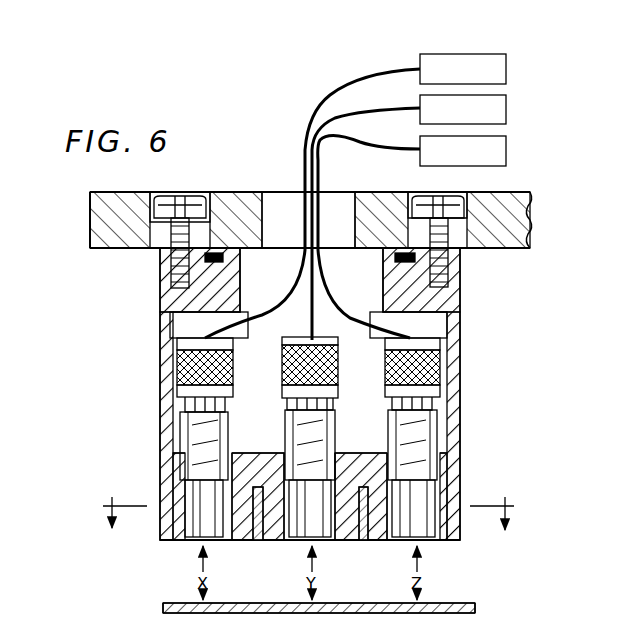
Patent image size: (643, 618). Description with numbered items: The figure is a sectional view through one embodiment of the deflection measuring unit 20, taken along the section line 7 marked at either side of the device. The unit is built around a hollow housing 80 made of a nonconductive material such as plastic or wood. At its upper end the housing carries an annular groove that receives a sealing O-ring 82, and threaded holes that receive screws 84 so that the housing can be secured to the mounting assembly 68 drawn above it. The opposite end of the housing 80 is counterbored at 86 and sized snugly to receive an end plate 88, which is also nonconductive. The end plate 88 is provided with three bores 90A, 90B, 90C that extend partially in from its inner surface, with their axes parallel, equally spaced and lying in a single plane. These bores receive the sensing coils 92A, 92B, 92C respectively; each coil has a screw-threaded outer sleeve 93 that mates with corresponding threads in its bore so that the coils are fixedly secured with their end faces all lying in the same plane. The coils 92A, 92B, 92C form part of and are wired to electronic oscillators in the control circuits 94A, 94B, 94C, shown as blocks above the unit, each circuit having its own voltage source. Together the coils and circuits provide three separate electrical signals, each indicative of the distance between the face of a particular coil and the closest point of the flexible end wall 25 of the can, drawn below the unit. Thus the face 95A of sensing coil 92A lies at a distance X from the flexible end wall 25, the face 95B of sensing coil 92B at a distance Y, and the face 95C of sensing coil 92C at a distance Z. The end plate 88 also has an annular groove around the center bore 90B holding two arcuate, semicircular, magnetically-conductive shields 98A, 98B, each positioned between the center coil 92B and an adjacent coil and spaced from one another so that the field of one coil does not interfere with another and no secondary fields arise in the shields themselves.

The section line 7- 7 is at (308, 506).
The deflection measuring unit 20 is at (158, 333).
The flexible end wall 25 is at (478, 608).
The mounting assembly 68 is at (532, 212).
The hollow housing 80 is at (462, 300).
The sealing O-ring 82 is at (462, 262).
The screws 84 is at (452, 198).
The counterbore 86 is at (462, 470).
The end plate 88 is at (445, 541).
The first bore 90A is at (195, 500).
The center bore 90B is at (300, 495).
The third bore 90C is at (405, 478).
The first sensing coil 92A is at (190, 537).
The center sensing coil 92B is at (300, 470).
The third sensing coil 92C is at (462, 527).
The screw-threaded outer sleeve 93 is at (190, 405).
The first control circuit 94A is at (355, 196).
The second control circuit 94B is at (409, 217).
The third control circuit 94C is at (412, 236).
The face of first sensing coil 95A is at (193, 538).
The face of center sensing coil 95B is at (242, 540).
The face of third sensing coil 95C is at (395, 540).
The first magnetically-conductive shield 98A is at (238, 542).
The second magnetically-conductive shield 98B is at (348, 542).